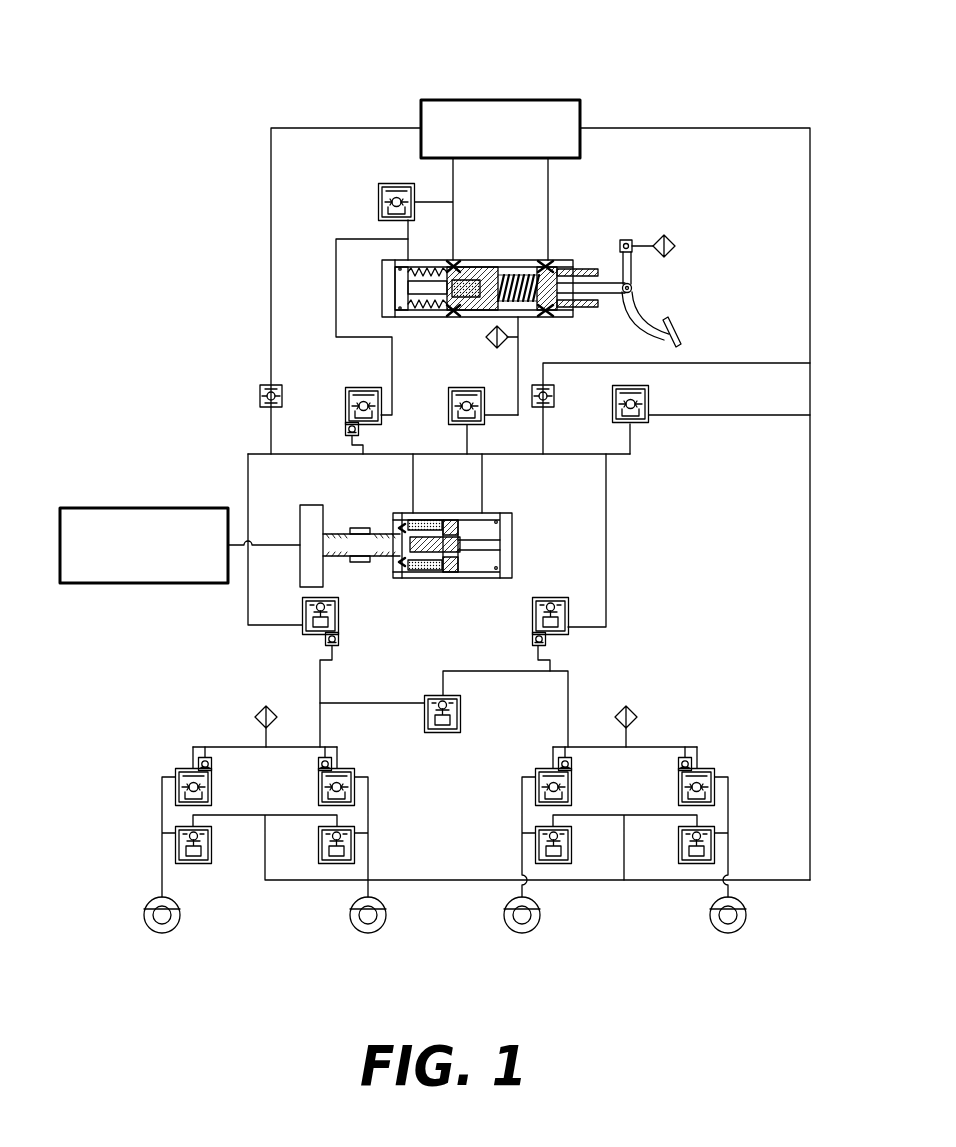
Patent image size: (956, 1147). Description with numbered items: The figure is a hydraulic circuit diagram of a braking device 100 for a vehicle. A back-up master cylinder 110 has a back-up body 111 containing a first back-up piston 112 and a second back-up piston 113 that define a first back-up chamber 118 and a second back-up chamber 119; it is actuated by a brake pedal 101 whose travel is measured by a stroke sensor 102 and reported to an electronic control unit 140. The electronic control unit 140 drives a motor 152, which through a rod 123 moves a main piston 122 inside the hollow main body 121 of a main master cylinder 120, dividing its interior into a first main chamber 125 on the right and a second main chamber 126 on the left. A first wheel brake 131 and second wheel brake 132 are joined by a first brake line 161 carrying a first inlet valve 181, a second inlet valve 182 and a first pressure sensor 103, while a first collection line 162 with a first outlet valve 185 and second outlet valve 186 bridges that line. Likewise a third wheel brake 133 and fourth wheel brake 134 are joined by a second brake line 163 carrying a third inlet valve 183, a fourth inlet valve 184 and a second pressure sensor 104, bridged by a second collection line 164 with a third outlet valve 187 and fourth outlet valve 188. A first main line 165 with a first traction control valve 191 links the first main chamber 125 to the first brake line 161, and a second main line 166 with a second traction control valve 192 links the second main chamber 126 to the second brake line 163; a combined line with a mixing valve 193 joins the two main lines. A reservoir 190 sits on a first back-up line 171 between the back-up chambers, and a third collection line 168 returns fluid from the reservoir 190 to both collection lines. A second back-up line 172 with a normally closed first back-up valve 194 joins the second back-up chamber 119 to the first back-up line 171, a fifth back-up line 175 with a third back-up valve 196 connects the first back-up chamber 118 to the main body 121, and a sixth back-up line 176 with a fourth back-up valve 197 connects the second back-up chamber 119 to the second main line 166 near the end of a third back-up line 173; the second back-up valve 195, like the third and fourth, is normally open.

The braking device 100 is at (202, 32).
The brake pedal 101 is at (640, 303).
The stroke sensor 102 is at (668, 238).
The first pressure sensor 103 is at (637, 711).
The second pressure sensor 104 is at (257, 710).
The back-up master cylinder 110 is at (511, 245).
The back-up body 111 is at (520, 260).
The first back-up piston 112 is at (568, 254).
The second back-up piston 113 is at (460, 262).
The first back-up chamber 118 is at (505, 268).
The second back-up chamber 119 is at (425, 262).
The main master cylinder 120 is at (500, 543).
The main body 121 is at (428, 520).
The main piston 122 is at (452, 522).
The rod 123 is at (345, 530).
The first main chamber 125 is at (478, 568).
The second main chamber 126 is at (428, 567).
The first wheel brake 131 is at (540, 927).
The second wheel brake 132 is at (710, 927).
The third wheel brake 133 is at (180, 927).
The fourth wheel brake 134 is at (350, 927).
The electronic control unit 140 is at (185, 508).
The motor 152 is at (303, 505).
The first brake line 161 is at (728, 815).
The first collection line 162 is at (583, 815).
The second brake line 163 is at (162, 818).
The second collection line 164 is at (220, 815).
The first main line 165 is at (606, 585).
The second main line 166 is at (248, 600).
The third collection line 168 is at (650, 128).
The first back-up line 171 is at (548, 180).
The second back-up line 172 is at (438, 200).
The third back-up line 173 is at (365, 128).
The fifth back-up line 175 is at (522, 352).
The sixth back-up line 176 is at (336, 256).
The first inlet valve 181 is at (540, 768).
The second inlet valve 182 is at (705, 768).
The third inlet valve 183 is at (185, 768).
The fourth inlet valve 184 is at (348, 768).
The first outlet valve 185 is at (553, 865).
The second outlet valve 186 is at (697, 865).
The third outlet valve 187 is at (193, 865).
The fourth outlet valve 188 is at (337, 865).
The reservoir 190 is at (522, 100).
The first traction control valve 191 is at (568, 630).
The second traction control valve 192 is at (302, 630).
The mixing valve 193 is at (443, 733).
The first back-up valve 194 is at (378, 203).
The second back-up valve 195 is at (648, 402).
The third back-up valve 196 is at (462, 388).
The fourth back-up valve 197 is at (345, 398).